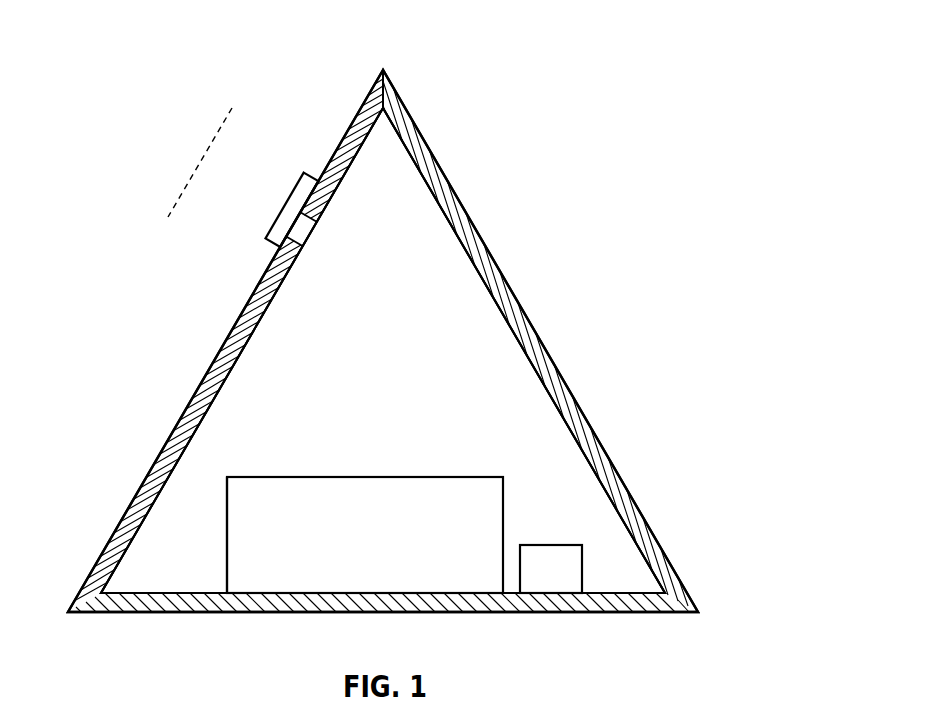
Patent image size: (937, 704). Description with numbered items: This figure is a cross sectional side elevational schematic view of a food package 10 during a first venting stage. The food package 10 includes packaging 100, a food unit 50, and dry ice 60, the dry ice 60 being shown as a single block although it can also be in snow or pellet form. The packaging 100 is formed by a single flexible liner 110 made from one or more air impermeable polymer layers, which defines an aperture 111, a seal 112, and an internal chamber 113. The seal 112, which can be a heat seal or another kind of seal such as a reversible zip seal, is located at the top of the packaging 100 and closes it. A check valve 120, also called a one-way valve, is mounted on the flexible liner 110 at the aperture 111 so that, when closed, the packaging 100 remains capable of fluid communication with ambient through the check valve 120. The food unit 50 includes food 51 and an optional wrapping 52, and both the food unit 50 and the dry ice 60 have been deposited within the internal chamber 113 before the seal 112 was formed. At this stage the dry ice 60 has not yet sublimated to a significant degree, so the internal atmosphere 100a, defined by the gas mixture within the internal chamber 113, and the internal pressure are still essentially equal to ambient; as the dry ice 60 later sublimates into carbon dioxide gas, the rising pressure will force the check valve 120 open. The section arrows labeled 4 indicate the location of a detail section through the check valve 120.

The food package 10 is at (698, 42).
The packaging 100 is at (505, 192).
The internal atmosphere 100a is at (443, 360).
The internal chamber 113 is at (383, 350).
The flexible liner 110 is at (597, 427).
The aperture 111 is at (313, 233).
The seal 112 is at (383, 68).
The check valve 120 is at (283, 197).
The section line for FIG. 4 is at (232, 108).
The food unit 50 is at (413, 465).
The food 51 is at (302, 532).
The wrapping 52 is at (325, 477).
The dry ice 60 is at (548, 540).